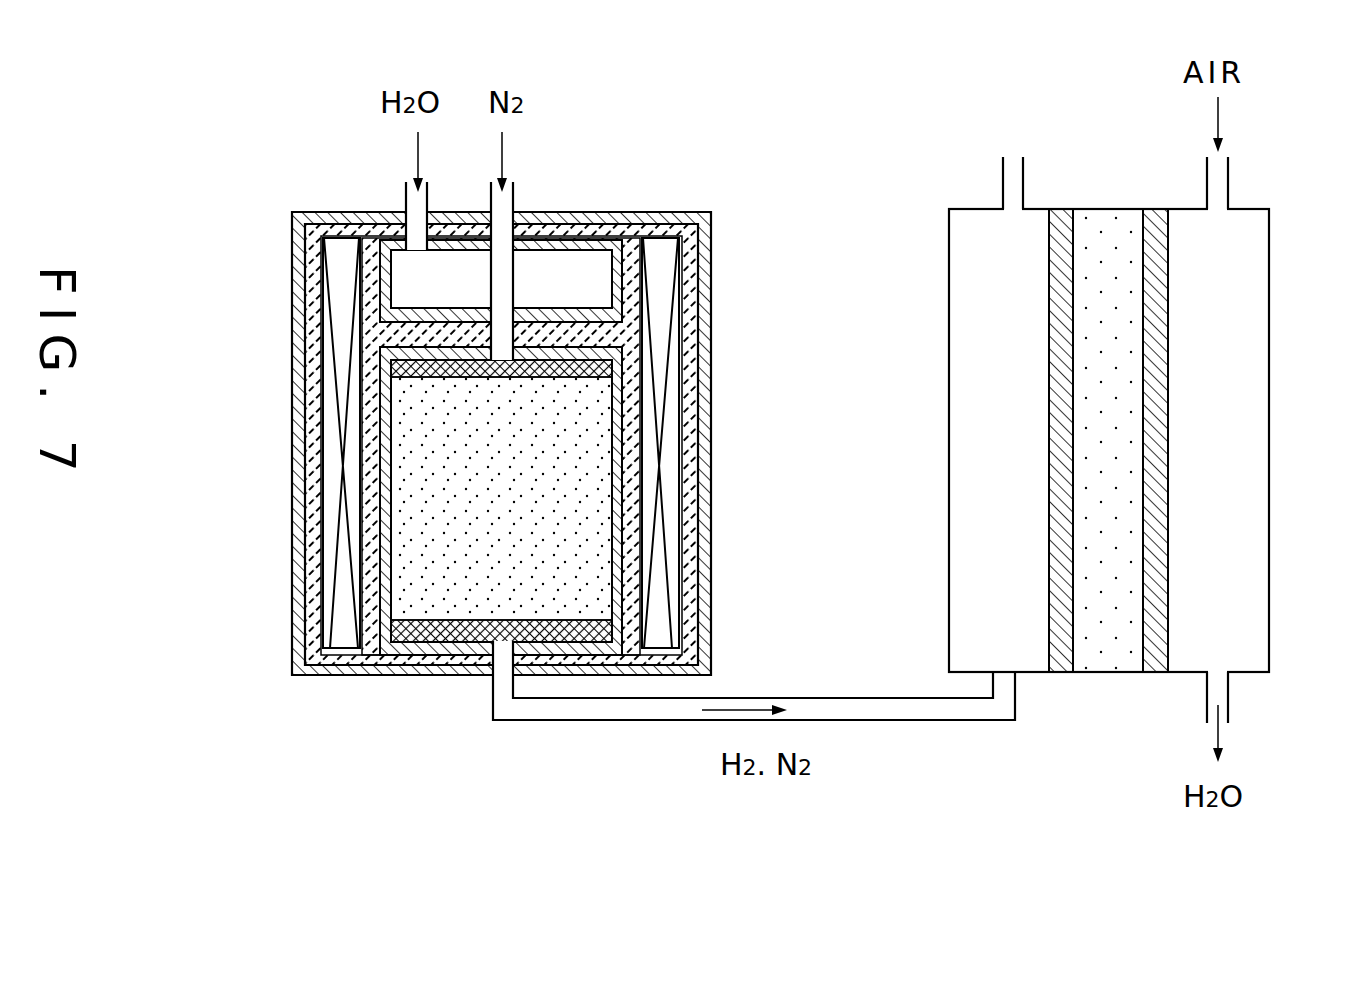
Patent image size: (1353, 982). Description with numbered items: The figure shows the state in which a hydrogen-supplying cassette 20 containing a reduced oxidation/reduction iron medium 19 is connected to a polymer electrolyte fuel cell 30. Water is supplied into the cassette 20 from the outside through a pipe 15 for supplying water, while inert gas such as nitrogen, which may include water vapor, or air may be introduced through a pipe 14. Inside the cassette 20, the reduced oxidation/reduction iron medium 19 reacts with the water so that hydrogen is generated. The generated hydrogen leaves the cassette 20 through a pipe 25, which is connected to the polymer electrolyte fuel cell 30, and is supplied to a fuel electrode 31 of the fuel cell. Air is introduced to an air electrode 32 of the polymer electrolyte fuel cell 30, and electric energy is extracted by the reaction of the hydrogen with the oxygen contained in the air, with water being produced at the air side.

The pipe 14 is at (513, 193).
The pipe for supplying water 15 is at (407, 207).
The oxidation/reduction iron medium 19 is at (592, 487).
The cassette 20 is at (712, 350).
The pipe 25 is at (827, 697).
The polymer electrolyte fuel cell 30 is at (949, 307).
The fuel electrode 31 is at (1075, 247).
The air electrode 32 is at (1170, 322).